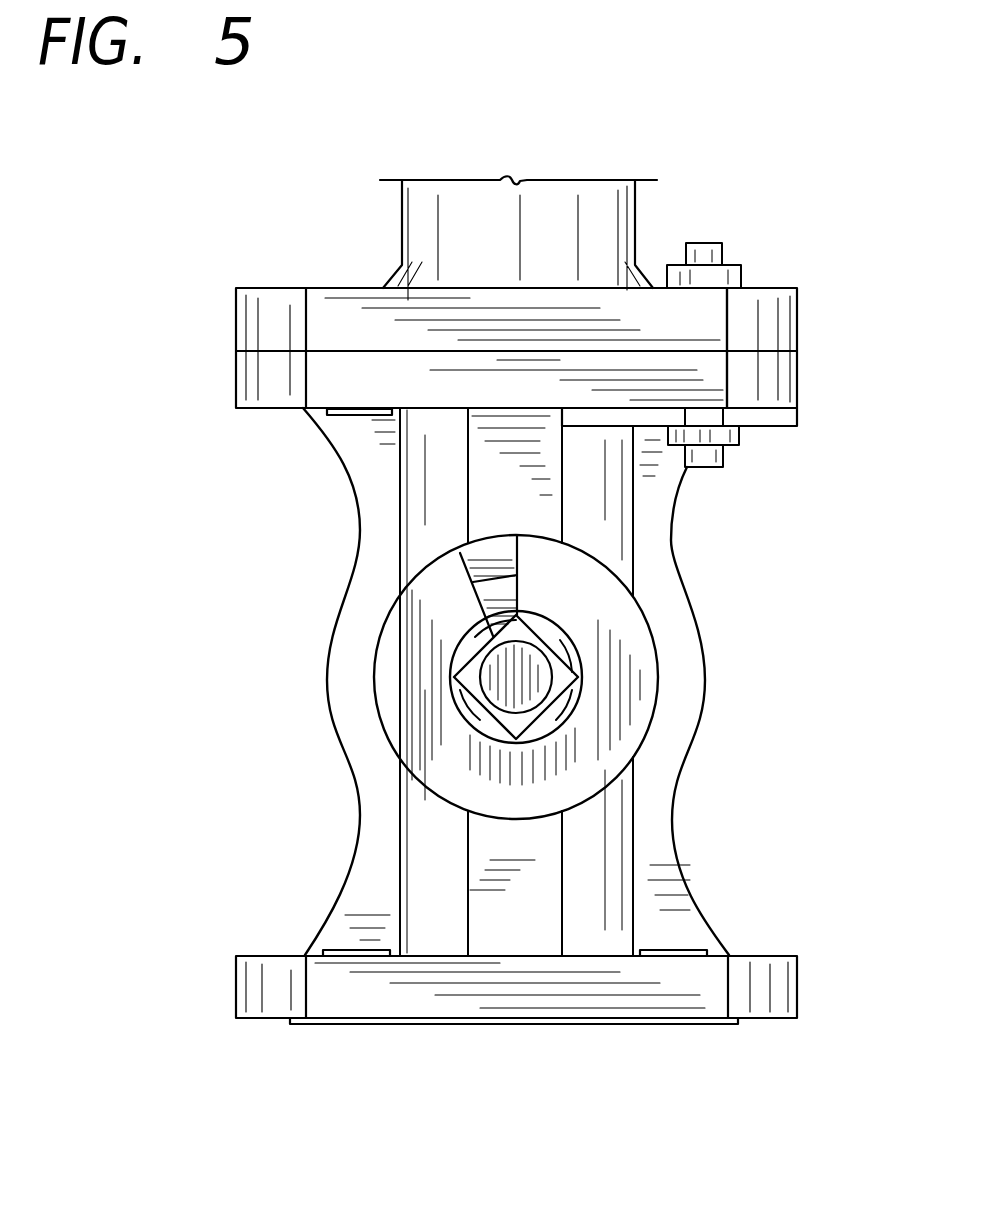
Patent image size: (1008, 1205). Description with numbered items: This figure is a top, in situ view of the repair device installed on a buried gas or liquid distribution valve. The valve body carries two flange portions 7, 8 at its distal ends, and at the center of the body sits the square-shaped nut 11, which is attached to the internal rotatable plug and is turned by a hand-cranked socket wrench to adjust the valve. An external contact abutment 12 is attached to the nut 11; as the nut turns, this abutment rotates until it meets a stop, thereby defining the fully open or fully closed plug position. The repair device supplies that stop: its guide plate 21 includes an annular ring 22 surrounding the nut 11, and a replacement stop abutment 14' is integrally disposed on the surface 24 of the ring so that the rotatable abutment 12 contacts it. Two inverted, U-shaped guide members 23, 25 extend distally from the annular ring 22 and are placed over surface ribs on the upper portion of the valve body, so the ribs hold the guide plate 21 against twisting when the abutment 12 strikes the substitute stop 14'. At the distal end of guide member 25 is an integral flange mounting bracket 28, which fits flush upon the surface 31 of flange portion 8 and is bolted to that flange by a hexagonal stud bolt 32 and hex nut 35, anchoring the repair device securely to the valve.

The flange portion 7 is at (787, 987).
The flange portion 8 is at (247, 392).
The square-shaped nut 11 is at (577, 663).
The external contact abutment 12 is at (463, 708).
The replacement stop abutment 14' is at (610, 585).
The guide plate 21 is at (655, 682).
The annular ring 22 is at (588, 797).
The guide member 23 is at (530, 873).
The surface 24 is at (618, 735).
The guide member 25 is at (562, 517).
The flange mounting bracket 28 is at (785, 418).
The surface 31 is at (772, 398).
The hexagonal stud bolt 32 is at (723, 460).
The hex nut 35 is at (740, 440).